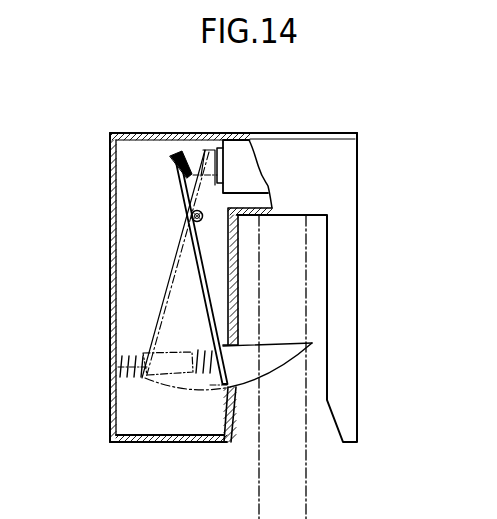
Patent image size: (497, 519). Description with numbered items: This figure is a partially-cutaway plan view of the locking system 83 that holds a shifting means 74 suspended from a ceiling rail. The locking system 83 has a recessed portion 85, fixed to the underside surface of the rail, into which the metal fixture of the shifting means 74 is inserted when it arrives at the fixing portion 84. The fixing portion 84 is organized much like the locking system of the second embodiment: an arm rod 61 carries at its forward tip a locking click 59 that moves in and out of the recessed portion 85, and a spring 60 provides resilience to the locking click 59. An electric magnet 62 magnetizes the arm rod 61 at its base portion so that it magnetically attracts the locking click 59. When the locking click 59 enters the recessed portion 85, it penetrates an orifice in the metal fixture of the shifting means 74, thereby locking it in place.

The locking system 83 is at (121, 132).
The fixing portion 84 is at (110, 213).
The electric magnet 62 is at (241, 157).
The recessed portion 85 is at (328, 240).
The shifting means 74 is at (305, 432).
The arm rod 61 is at (197, 275).
The spring 60 is at (113, 374).
The locking click 59 is at (250, 370).